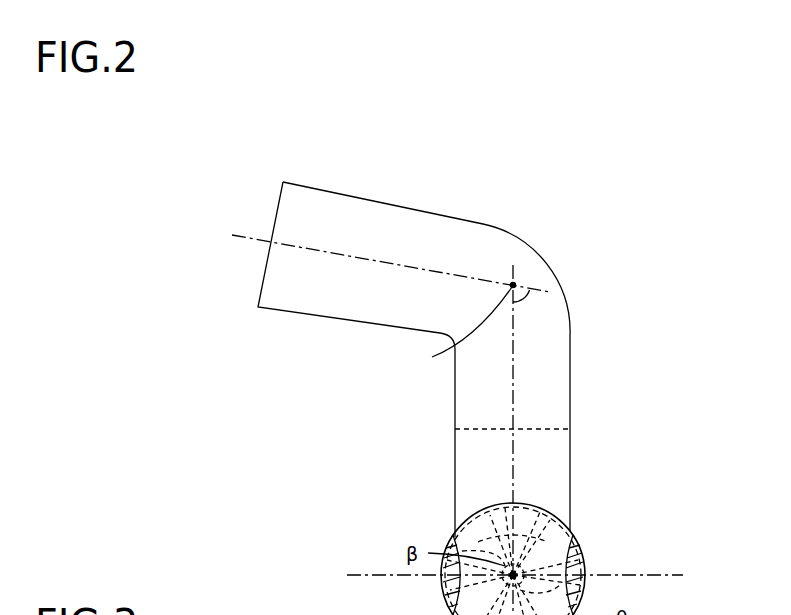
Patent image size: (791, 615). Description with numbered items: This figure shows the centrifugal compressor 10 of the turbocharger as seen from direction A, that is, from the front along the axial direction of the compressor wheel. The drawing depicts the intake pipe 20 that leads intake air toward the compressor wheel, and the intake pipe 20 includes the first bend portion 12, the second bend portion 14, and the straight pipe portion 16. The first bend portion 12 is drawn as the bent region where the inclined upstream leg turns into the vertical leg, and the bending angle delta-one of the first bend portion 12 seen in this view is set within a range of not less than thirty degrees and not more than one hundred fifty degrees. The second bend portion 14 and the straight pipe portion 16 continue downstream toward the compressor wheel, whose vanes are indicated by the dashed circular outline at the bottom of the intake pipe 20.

The centrifugal compressor 10 is at (203, 194).
The first bend portion 12 is at (543, 277).
The second bend portion 14 is at (562, 482).
The straight pipe portion 16 is at (550, 560).
The intake pipe 20 is at (642, 271).